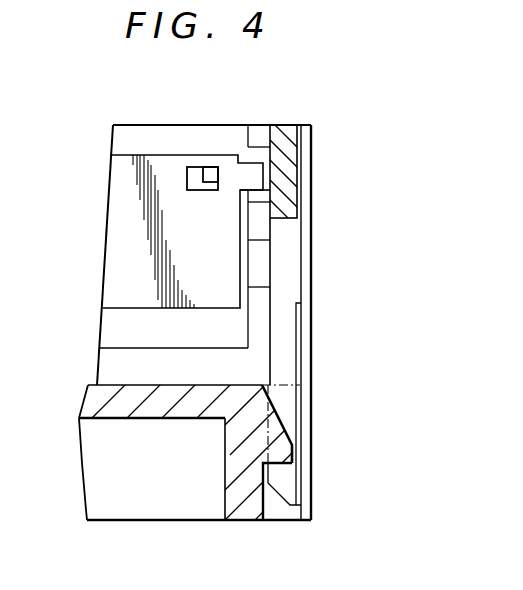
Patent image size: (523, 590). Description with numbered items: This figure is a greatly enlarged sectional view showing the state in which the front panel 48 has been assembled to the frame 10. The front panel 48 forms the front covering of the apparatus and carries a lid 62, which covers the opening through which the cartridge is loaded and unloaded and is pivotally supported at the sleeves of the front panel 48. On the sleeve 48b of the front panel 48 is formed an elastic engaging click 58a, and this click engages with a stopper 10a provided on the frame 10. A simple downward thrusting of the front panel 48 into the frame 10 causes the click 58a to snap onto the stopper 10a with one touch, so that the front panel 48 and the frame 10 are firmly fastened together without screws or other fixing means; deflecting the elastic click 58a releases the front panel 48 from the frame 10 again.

The front panel 48 is at (314, 138).
The sleeve 48b is at (278, 214).
The lid 62 is at (105, 275).
The frame 10 is at (97, 408).
The stopper 10a is at (287, 432).
The elastic engaging click 58a is at (280, 482).